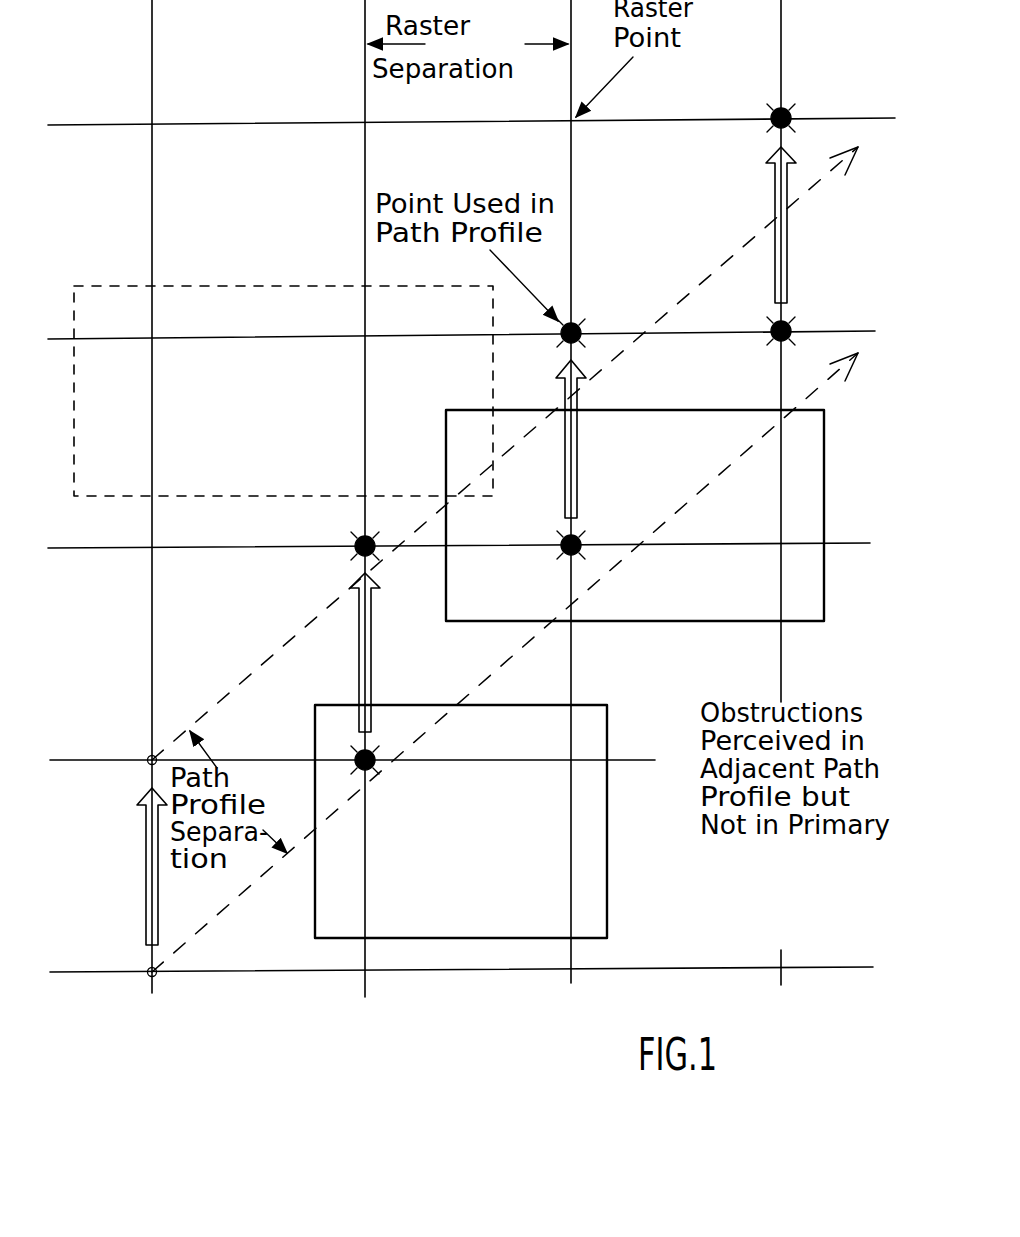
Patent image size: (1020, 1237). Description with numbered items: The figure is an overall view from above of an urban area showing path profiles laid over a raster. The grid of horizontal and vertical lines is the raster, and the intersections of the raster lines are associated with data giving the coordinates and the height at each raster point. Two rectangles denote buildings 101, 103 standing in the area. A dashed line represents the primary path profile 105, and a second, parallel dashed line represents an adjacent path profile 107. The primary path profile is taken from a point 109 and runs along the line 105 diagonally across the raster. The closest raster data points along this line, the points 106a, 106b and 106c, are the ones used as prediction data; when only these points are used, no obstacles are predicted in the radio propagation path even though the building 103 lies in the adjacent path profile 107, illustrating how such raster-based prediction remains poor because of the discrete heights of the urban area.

The building 101 is at (603, 719).
The building 103 is at (816, 490).
The primary path profile 105 is at (682, 303).
The adjacent path profile 107 is at (198, 946).
The point 109 is at (148, 756).
The raster data point 106a is at (358, 538).
The raster data point 106b is at (566, 342).
The raster data point 106c is at (786, 108).